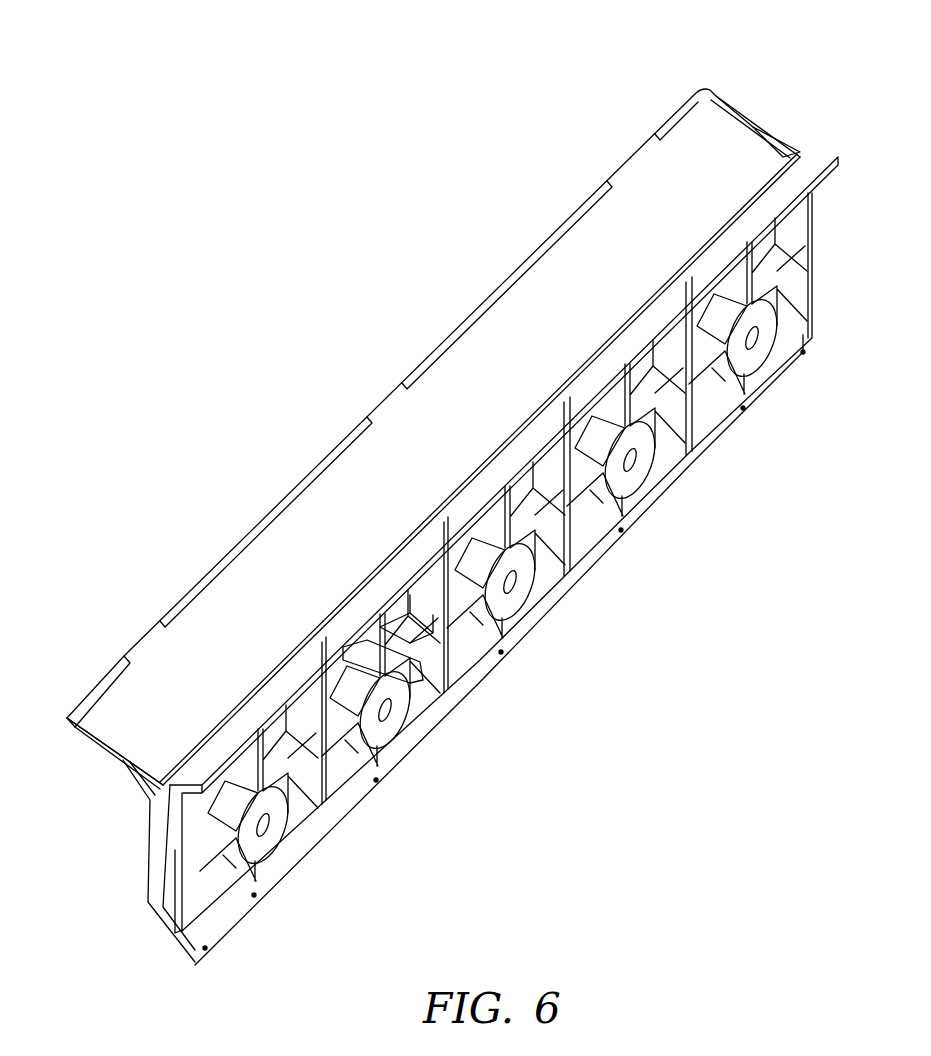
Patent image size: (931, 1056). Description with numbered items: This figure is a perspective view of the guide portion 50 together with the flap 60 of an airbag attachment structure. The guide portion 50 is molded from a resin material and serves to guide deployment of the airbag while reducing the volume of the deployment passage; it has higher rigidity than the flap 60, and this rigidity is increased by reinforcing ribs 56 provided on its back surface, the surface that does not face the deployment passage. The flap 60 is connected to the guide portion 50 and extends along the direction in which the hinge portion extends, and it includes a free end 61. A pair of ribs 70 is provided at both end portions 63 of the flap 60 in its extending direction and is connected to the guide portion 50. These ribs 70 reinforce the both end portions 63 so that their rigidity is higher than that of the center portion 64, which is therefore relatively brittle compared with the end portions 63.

The guide portion 50 is at (435, 782).
The reinforcing ribs 56 is at (745, 385).
The flap 60 is at (447, 488).
The free end 61 is at (351, 416).
The both end portions 63 is at (738, 145).
The center portion 64 is at (428, 437).
The ribs 70 is at (788, 140).